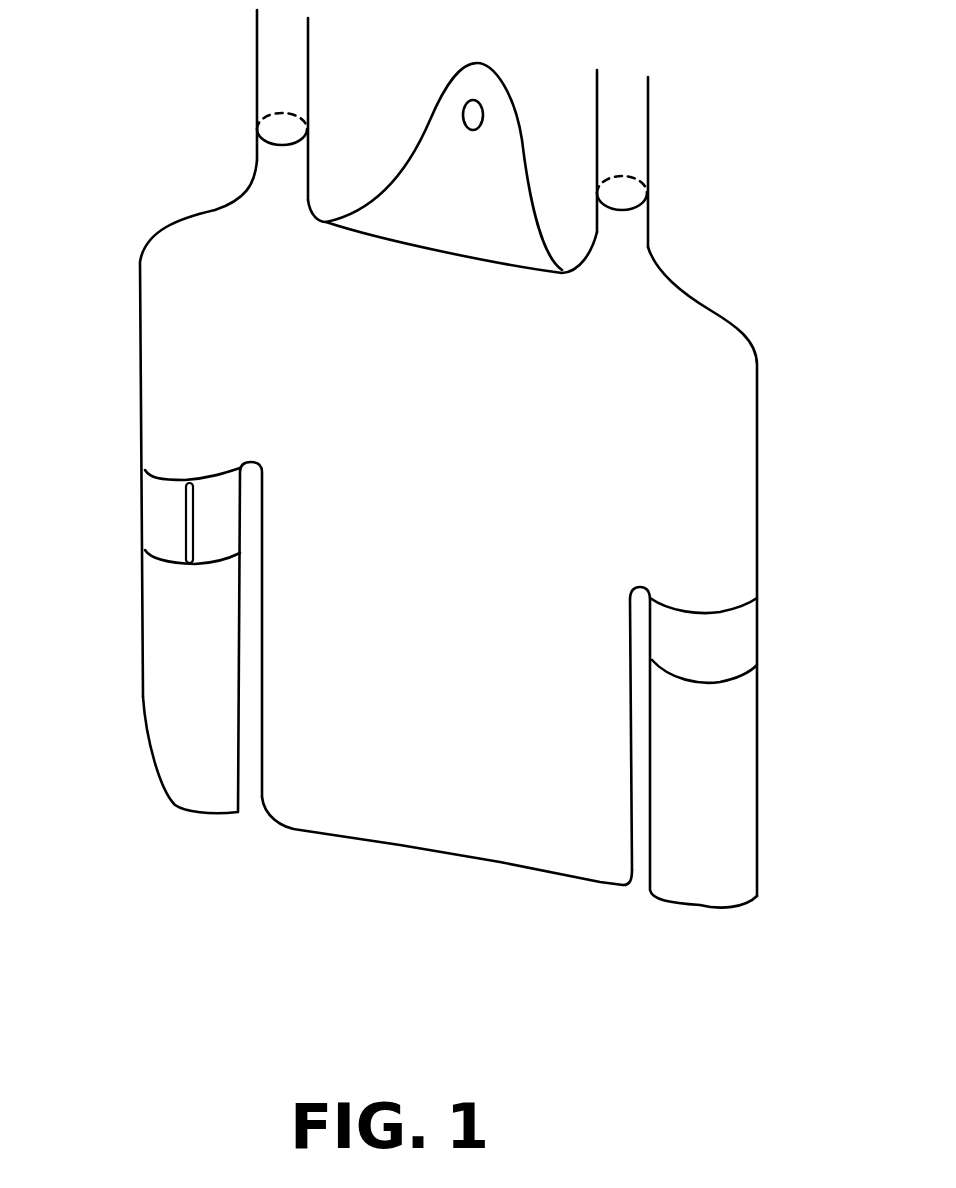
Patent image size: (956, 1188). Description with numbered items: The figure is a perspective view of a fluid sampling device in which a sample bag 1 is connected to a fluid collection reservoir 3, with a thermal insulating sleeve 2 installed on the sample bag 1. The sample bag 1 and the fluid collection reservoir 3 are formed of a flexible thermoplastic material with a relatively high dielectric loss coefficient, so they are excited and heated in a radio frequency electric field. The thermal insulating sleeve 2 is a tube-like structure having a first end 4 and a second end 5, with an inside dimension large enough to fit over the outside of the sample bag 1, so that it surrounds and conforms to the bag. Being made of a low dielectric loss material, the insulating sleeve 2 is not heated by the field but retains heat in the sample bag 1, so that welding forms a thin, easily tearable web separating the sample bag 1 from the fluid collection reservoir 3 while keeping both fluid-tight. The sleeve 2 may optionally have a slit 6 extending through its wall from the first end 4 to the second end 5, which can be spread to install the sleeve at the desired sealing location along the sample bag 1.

The sample bag 1 is at (177, 649).
The thermal insulating sleeve 2 is at (434, 559).
The fluid collection reservoir 3 is at (447, 812).
The first end 4 is at (162, 553).
The second end 5 is at (152, 479).
The slit 6 is at (196, 514).